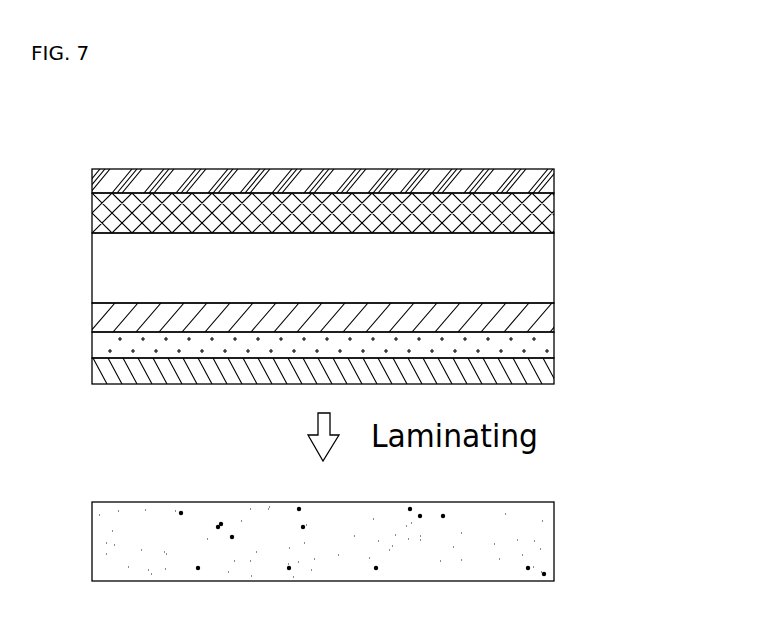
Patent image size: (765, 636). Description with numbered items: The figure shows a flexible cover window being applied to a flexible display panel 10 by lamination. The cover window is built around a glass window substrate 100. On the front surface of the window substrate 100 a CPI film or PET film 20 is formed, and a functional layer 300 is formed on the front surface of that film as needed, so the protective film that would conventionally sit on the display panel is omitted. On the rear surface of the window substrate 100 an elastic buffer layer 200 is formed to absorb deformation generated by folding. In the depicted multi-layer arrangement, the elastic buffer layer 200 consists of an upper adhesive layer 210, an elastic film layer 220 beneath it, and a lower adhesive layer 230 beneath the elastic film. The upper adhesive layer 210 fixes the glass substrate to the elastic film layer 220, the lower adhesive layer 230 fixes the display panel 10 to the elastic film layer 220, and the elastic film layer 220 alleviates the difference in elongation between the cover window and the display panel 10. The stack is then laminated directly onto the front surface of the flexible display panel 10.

The functional layer 300 is at (554, 178).
The CPI film or PET film 20 is at (554, 212).
The window substrate 100 is at (543, 264).
The elastic buffer layer 200 is at (389, 343).
The upper adhesive layer 210 is at (540, 319).
The elastic film layer 220 is at (542, 345).
The lower adhesive layer 230 is at (553, 370).
The flexible display panel 10 is at (540, 549).